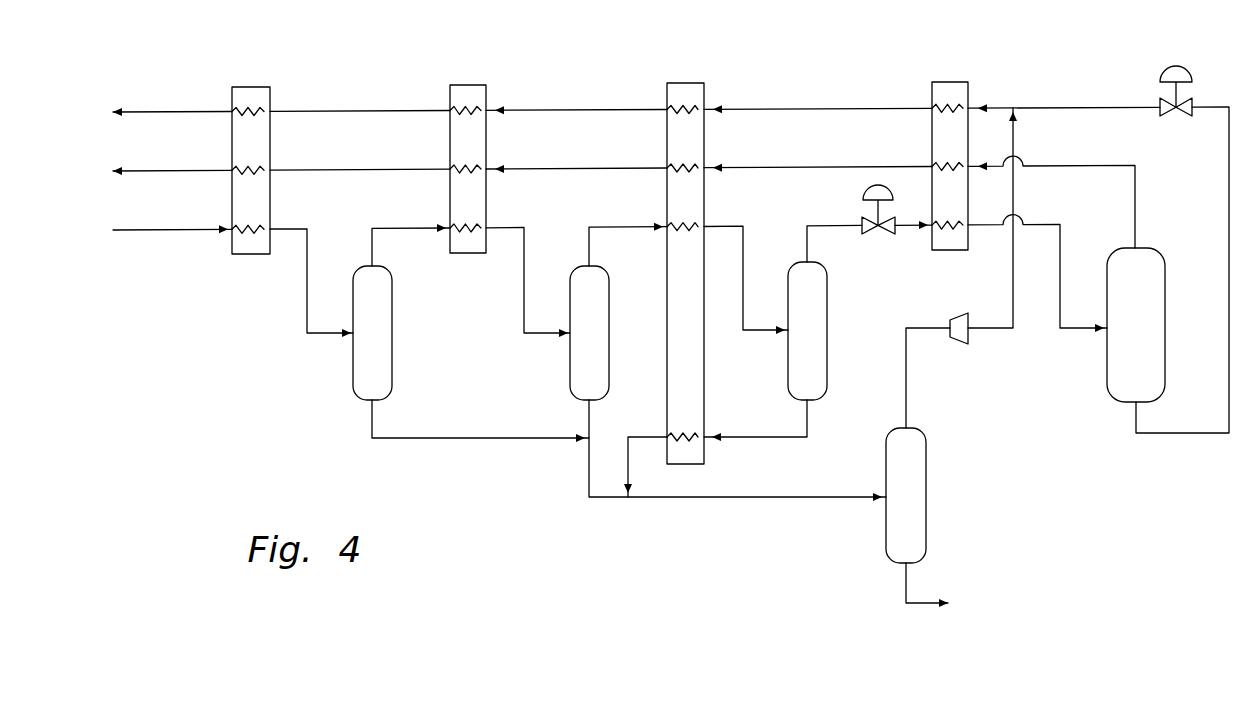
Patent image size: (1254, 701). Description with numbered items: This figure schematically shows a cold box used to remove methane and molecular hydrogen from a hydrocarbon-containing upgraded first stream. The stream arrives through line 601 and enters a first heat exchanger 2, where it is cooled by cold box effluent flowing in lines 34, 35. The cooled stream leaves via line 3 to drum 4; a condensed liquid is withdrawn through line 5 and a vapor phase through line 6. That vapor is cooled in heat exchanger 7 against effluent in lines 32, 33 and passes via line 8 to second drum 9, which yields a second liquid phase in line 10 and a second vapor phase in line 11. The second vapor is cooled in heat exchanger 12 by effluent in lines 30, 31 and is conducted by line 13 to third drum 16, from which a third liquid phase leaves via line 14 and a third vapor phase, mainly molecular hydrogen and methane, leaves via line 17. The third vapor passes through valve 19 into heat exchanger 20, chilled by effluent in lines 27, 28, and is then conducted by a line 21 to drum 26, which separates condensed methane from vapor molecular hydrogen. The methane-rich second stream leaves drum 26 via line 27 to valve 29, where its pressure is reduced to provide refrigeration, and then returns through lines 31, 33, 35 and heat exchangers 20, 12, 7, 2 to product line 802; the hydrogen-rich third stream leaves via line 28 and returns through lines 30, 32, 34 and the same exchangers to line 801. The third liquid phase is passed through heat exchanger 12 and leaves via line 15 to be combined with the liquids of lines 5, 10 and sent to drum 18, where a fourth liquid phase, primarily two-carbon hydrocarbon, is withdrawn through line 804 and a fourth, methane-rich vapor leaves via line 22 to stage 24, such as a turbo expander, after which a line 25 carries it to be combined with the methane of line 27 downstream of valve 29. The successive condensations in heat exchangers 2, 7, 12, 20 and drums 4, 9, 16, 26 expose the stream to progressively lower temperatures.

The first heat exchanger 2 is at (250, 86).
The line 3 is at (323, 341).
The drum 4 is at (394, 305).
The line 5 is at (420, 438).
The line 6 is at (424, 227).
The heat exchanger 7 is at (466, 84).
The line 8 is at (546, 340).
The second drum 9 is at (611, 300).
The line 10 is at (589, 418).
The line 11 is at (640, 226).
The heat exchanger 12 is at (686, 82).
The line 13 is at (761, 339).
The line 14 is at (745, 440).
The line 15 is at (652, 436).
The third drum 16 is at (830, 300).
The line 17 is at (842, 225).
The drum 18 is at (929, 462).
The valve 19 is at (873, 233).
The heat exchanger 20 is at (948, 81).
The cooled stream 21 is at (1046, 223).
The line 22 is at (929, 327).
The stage 24 is at (960, 346).
The compressed stream 25 is at (1012, 264).
The drum 26 is at (1168, 293).
The line 27 is at (1050, 106).
The line 28 is at (1050, 164).
The valve 29 is at (1177, 64).
The line 30 is at (790, 166).
The line 31 is at (790, 108).
The line 32 is at (558, 167).
The line 33 is at (558, 108).
The line 34 is at (340, 168).
The line 35 is at (340, 109).
The line 601 is at (212, 228).
The line 801 is at (212, 170).
The line 802 is at (212, 111).
The line 804 is at (923, 606).